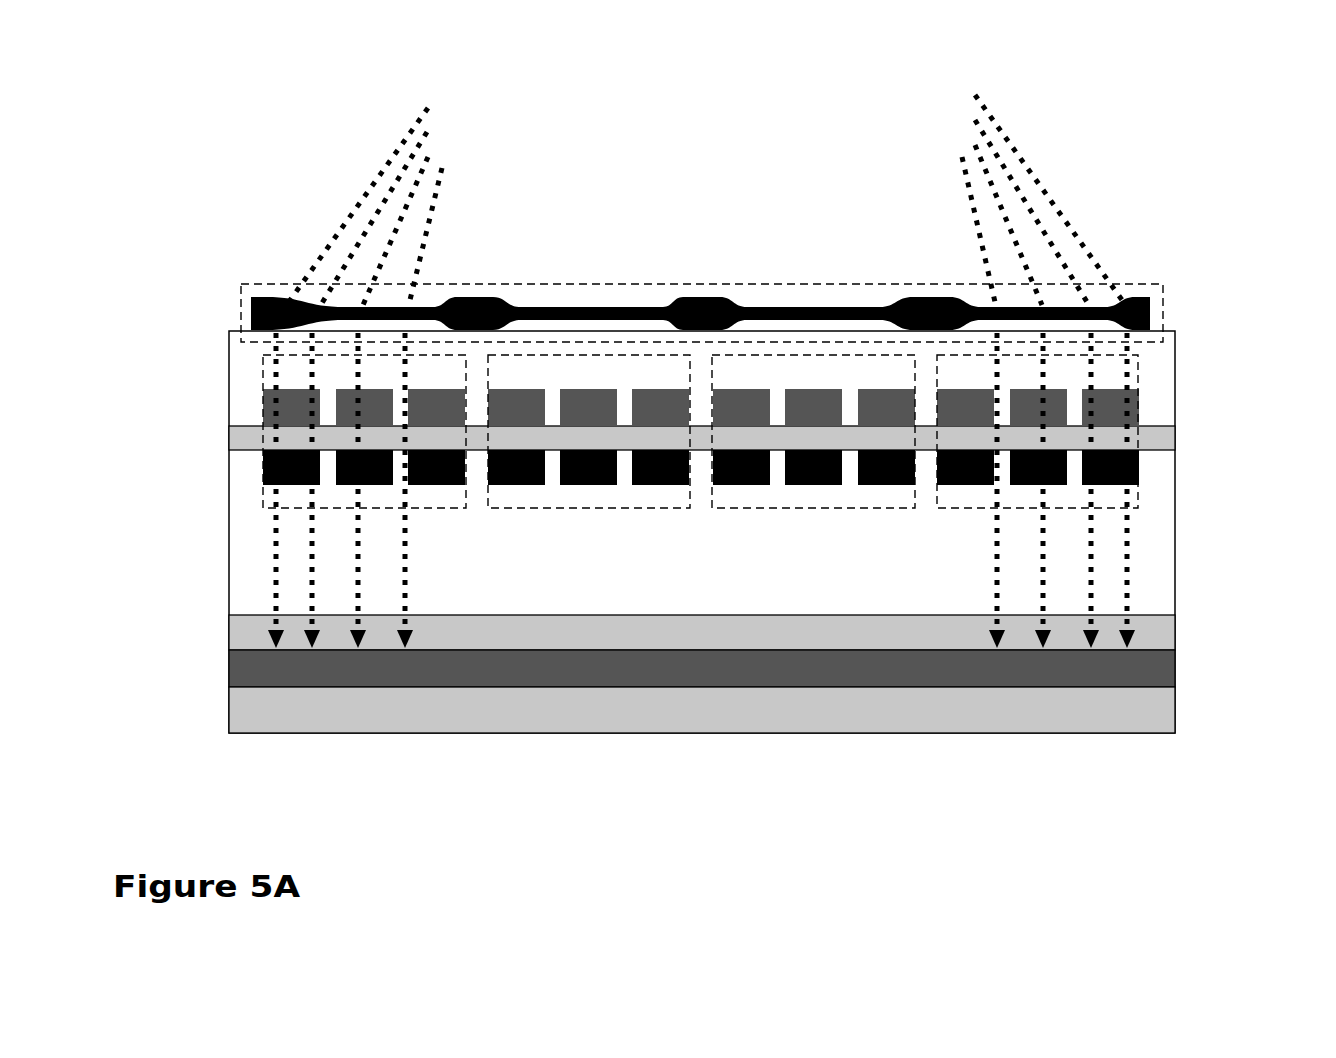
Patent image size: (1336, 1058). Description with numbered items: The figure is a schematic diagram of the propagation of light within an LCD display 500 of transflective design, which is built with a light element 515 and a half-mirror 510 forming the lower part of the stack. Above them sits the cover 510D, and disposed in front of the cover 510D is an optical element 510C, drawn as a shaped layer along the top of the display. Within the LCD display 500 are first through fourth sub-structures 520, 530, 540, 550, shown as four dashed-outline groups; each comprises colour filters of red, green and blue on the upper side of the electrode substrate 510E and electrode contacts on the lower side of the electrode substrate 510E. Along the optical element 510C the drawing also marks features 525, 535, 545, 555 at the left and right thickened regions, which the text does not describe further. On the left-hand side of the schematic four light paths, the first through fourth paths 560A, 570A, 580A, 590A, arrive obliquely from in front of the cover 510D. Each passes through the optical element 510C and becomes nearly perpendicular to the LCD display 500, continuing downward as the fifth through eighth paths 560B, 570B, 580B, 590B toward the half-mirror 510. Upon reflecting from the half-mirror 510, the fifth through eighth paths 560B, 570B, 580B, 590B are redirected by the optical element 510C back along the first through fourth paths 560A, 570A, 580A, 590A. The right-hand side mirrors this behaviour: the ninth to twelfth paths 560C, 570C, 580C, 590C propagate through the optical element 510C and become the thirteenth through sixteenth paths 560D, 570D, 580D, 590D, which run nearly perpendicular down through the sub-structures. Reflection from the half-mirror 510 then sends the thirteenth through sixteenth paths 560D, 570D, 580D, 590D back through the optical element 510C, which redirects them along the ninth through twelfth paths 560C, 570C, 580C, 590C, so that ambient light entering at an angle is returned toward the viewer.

The LCD display 500 is at (911, 786).
The half-mirror 510 is at (626, 729).
The light element 515 is at (312, 733).
The optical element 510C is at (227, 307).
The cover 510D is at (227, 392).
The electrode substrate 510E is at (227, 438).
The first sub-structure 520 is at (453, 507).
The second sub-structure 530 is at (572, 353).
The third sub-structure 540 is at (835, 353).
The fourth sub-structure 550 is at (948, 507).
The first lens portion 525 is at (440, 296).
The second lens portion 535 is at (512, 297).
The third lens portion 545 is at (890, 295).
The fourth lens portion 555 is at (965, 295).
The first path 560A is at (347, 220).
The second path 570A is at (347, 260).
The third path 580A is at (388, 237).
The fourth path 590A is at (430, 237).
The fifth path 560B is at (273, 533).
The sixth path 570B is at (310, 557).
The seventh path 580B is at (358, 578).
The eighth path 590B is at (405, 578).
The ninth path 560C is at (1063, 218).
The tenth path 570C is at (1055, 237).
The eleventh path 580C is at (1023, 257).
The twelfth path 590C is at (982, 240).
The thirteenth path 560D is at (1127, 533).
The fourteenth path 570D is at (1092, 557).
The fifteenth path 580D is at (1043, 578).
The sixteenth path 590D is at (997, 578).